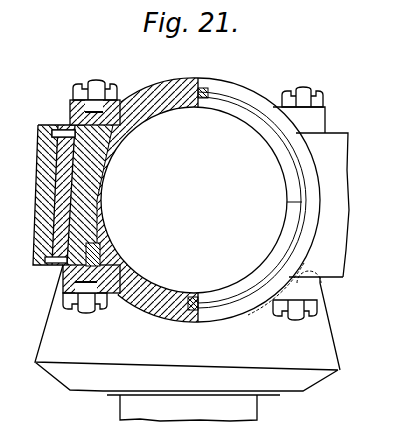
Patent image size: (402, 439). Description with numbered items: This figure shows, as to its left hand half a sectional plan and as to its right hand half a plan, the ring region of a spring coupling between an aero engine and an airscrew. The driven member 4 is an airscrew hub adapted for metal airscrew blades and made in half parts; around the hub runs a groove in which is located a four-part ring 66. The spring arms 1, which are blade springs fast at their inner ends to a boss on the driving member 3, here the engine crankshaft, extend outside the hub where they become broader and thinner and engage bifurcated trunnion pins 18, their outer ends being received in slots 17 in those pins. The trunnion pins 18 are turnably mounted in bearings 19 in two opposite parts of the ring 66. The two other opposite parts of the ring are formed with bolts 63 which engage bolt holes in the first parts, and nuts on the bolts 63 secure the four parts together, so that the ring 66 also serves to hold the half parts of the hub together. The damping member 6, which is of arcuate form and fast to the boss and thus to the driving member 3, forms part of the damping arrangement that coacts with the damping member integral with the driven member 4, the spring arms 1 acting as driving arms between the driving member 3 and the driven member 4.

The spring arms 1 is at (45, 267).
The driving member 3 is at (188, 408).
The driven member 4 is at (152, 110).
The damping member 6 is at (305, 379).
The slots 17 is at (58, 265).
The trunnion pins 18 is at (58, 128).
The bearings 19 is at (42, 124).
The bolts 63 is at (100, 83).
The ring 66 is at (199, 79).